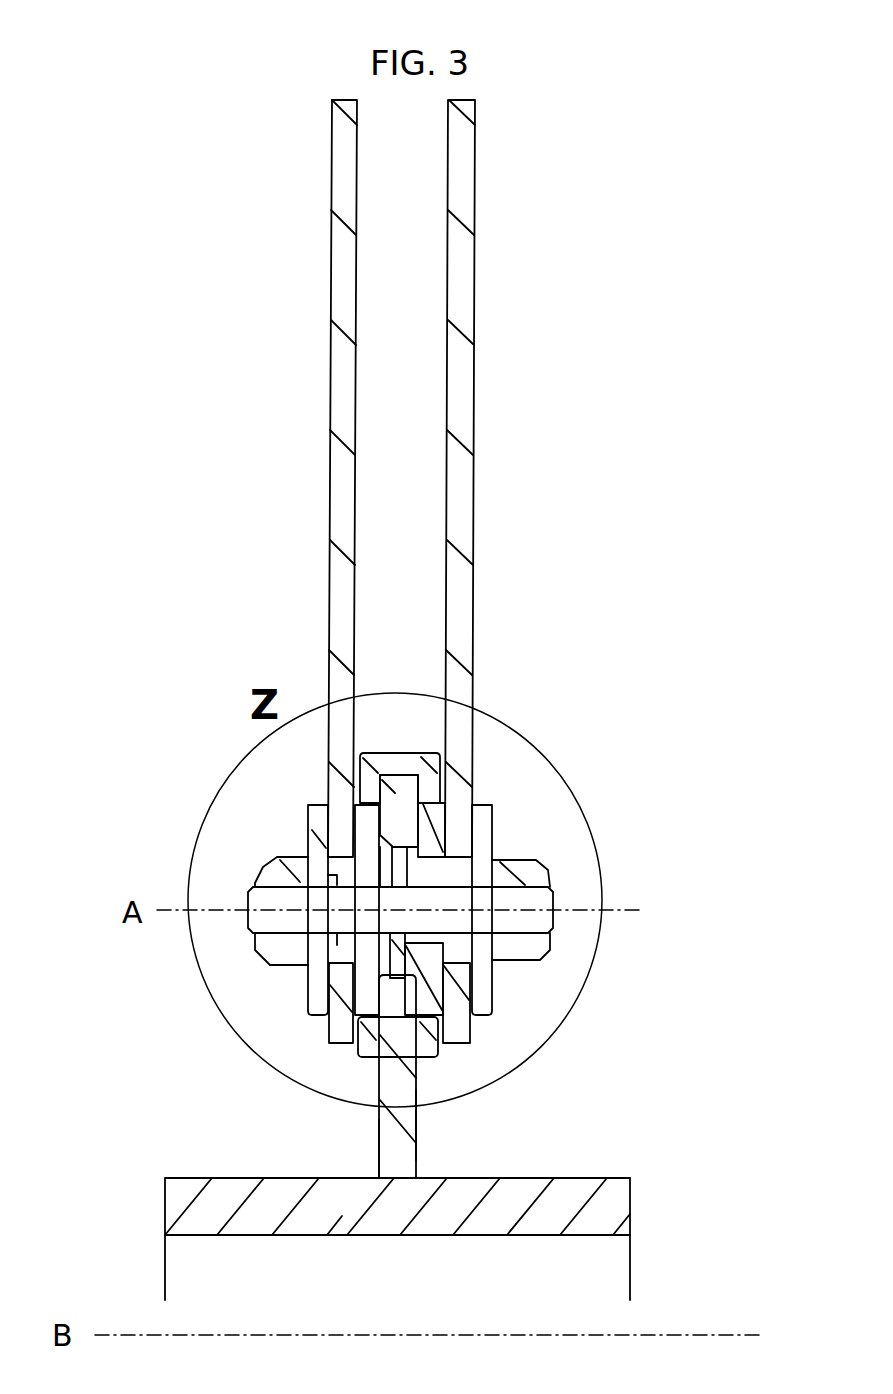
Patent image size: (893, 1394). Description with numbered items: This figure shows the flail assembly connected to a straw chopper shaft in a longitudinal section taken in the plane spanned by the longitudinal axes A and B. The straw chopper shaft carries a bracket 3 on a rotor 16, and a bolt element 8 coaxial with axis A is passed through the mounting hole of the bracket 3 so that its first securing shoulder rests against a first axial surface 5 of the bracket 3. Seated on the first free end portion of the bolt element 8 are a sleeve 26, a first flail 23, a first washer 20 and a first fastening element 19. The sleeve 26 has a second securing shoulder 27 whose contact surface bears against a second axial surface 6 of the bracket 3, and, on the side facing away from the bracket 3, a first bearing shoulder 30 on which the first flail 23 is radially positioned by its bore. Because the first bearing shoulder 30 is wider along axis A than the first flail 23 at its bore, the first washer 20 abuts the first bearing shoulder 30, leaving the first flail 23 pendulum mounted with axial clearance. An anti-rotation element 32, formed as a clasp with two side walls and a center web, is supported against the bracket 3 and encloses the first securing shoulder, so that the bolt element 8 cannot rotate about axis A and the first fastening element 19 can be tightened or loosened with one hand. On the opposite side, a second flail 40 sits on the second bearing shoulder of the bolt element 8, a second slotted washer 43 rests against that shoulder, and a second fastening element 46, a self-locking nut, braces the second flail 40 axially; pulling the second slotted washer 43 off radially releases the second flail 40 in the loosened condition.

The bracket 3 is at (395, 1073).
The first axial surface 5 is at (373, 1138).
The second axial surface 6 is at (418, 1118).
The bolt element 8 is at (555, 930).
The rotor 16 is at (602, 1203).
The first fastening element 19 is at (552, 872).
The first washer 20 is at (493, 837).
The first flail 23 is at (463, 240).
The sleeve 26 is at (443, 820).
The second securing shoulder 27 is at (447, 838).
The first bearing shoulder 30 is at (460, 972).
The anti-rotation element 32 is at (380, 760).
The second flail 40 is at (340, 197).
The second slotted washer 43 is at (310, 828).
The second fastening element 46 is at (280, 872).